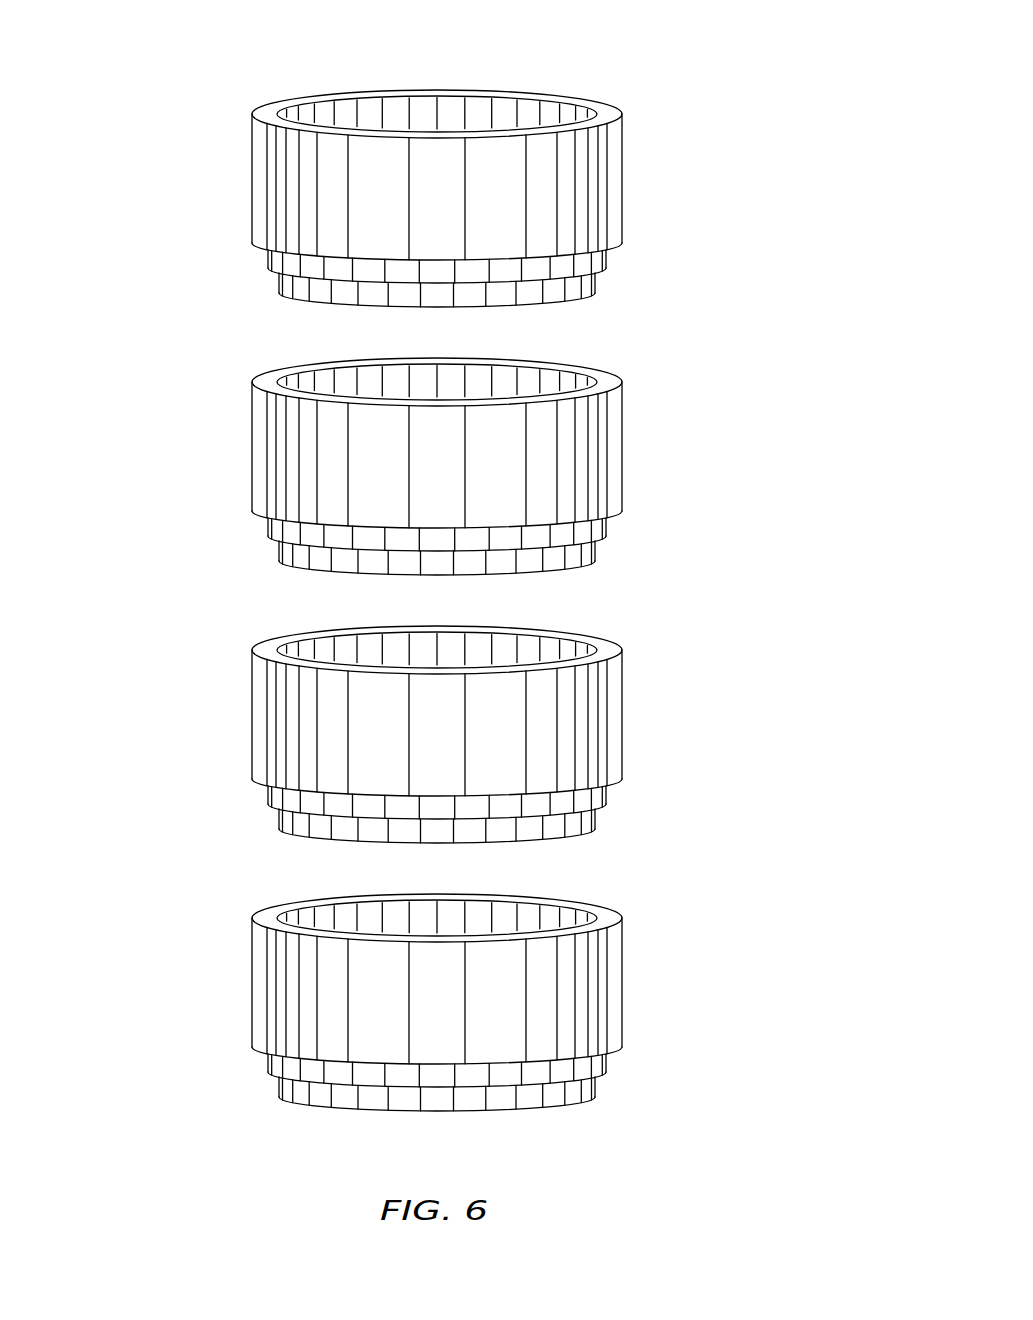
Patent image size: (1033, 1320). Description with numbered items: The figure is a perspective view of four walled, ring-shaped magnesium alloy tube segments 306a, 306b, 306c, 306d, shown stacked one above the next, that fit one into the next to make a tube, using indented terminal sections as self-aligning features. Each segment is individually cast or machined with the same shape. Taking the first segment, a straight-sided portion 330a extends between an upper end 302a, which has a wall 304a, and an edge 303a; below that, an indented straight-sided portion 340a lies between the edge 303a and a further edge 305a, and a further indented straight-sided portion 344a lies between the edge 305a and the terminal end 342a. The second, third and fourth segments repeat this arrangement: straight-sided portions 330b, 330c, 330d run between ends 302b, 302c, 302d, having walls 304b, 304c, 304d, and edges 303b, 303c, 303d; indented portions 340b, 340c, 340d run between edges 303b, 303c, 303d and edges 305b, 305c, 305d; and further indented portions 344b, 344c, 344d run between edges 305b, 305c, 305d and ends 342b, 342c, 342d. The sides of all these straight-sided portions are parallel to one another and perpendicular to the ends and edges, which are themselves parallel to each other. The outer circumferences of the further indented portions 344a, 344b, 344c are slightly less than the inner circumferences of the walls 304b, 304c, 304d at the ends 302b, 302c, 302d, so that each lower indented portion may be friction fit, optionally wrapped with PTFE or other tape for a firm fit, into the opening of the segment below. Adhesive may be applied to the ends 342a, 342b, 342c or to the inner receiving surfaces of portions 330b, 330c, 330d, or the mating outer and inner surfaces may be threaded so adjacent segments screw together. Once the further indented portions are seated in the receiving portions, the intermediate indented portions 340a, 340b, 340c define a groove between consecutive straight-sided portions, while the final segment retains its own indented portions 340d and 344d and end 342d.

The end 302a is at (263, 108).
The wall 304a is at (606, 114).
The segment 306a is at (227, 187).
The straight-sided portion 330a is at (623, 180).
The edge 303a is at (260, 248).
The indented straight-sided portion 340a is at (607, 260).
The edge 305a is at (603, 270).
The further indented straight-sided portion 344a is at (277, 283).
The end 342a is at (575, 299).
The end 302b is at (395, 377).
The wall 304b is at (515, 382).
The segment 306b is at (422, 477).
The straight-sided portion 330b is at (515, 455).
The edge 303b is at (386, 529).
The indented straight-sided portion 340b is at (508, 531).
The edge 305b is at (520, 563).
The further indented straight-sided portion 344b is at (381, 562).
The end 342b is at (472, 583).
The end 302c is at (395, 645).
The wall 304c is at (514, 650).
The segment 306c is at (421, 745).
The straight-sided portion 330c is at (514, 723).
The edge 303c is at (386, 797).
The indented straight-sided portion 340c is at (507, 799).
The edge 305c is at (519, 831).
The further indented straight-sided portion 344c is at (381, 830).
The end 342c is at (471, 851).
The end 302d is at (395, 913).
The wall 304d is at (516, 918).
The segment 306d is at (423, 1013).
The straight-sided portion 330d is at (515, 991).
The edge 303d is at (386, 1065).
The indented straight-sided portion 340d is at (508, 1067).
The edge 305d is at (521, 1099).
The further indented straight-sided portion 344d is at (381, 1098).
The end 342d is at (473, 1119).